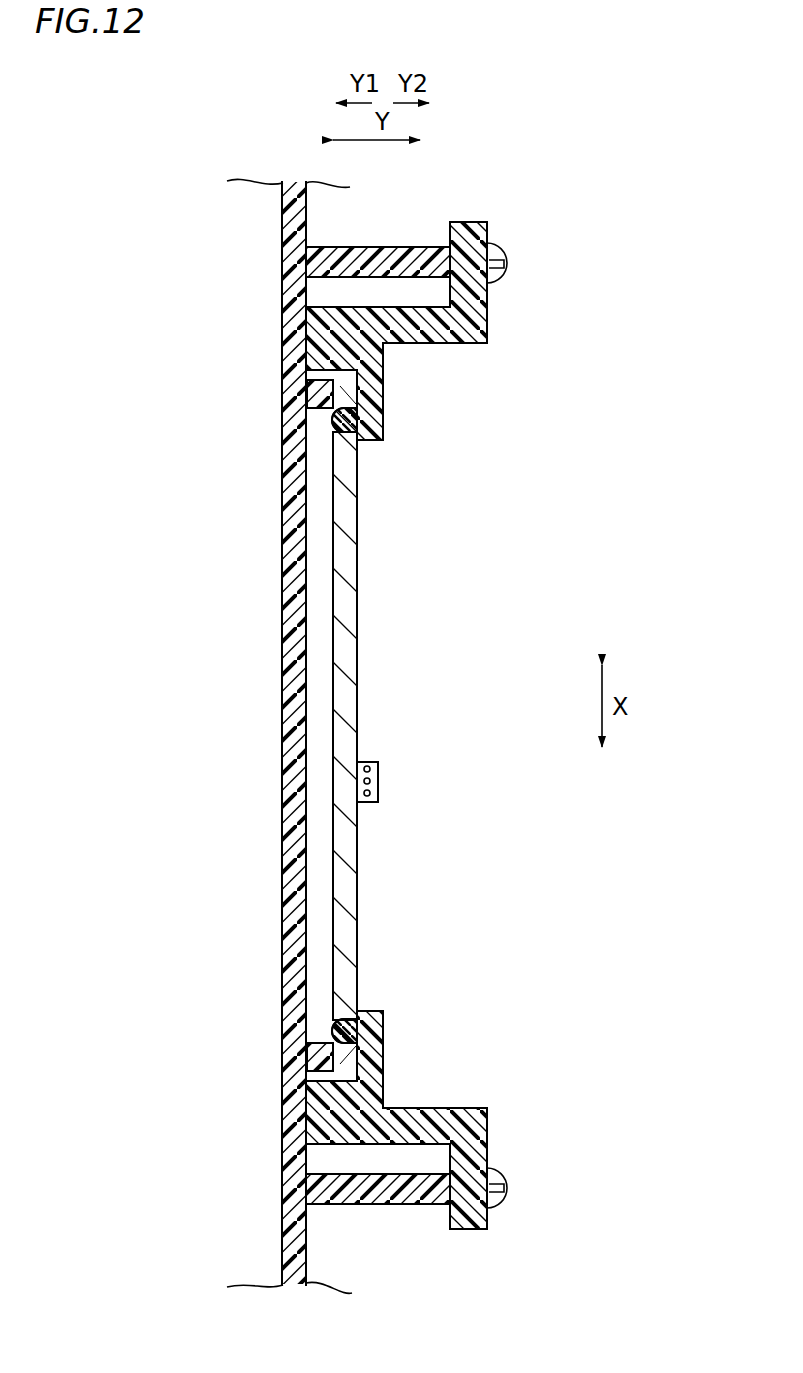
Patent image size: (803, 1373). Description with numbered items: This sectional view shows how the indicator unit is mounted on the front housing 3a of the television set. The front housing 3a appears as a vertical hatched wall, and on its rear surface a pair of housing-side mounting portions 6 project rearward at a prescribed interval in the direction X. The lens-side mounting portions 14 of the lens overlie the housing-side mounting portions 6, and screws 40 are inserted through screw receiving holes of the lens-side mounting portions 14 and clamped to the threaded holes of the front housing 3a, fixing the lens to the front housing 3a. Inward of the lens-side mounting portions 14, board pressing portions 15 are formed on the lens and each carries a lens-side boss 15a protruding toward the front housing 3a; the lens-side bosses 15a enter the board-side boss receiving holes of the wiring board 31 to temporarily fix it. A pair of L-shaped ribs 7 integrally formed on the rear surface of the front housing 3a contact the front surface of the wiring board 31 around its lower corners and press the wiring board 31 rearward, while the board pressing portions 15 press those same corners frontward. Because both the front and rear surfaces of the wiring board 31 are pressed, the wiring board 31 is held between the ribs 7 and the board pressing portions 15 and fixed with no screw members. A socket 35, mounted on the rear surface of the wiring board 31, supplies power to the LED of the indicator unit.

The front housing 3a is at (283, 748).
The housing-side mounting portions 6 is at (388, 250).
The ribs 7 is at (328, 409).
The lens-side mounting portions 14 is at (463, 725).
The board pressing portions 15 is at (383, 387).
The lens-side bosses 15a is at (330, 431).
The wiring board 31 is at (347, 722).
The socket 35 is at (373, 785).
The screws 40 is at (500, 254).